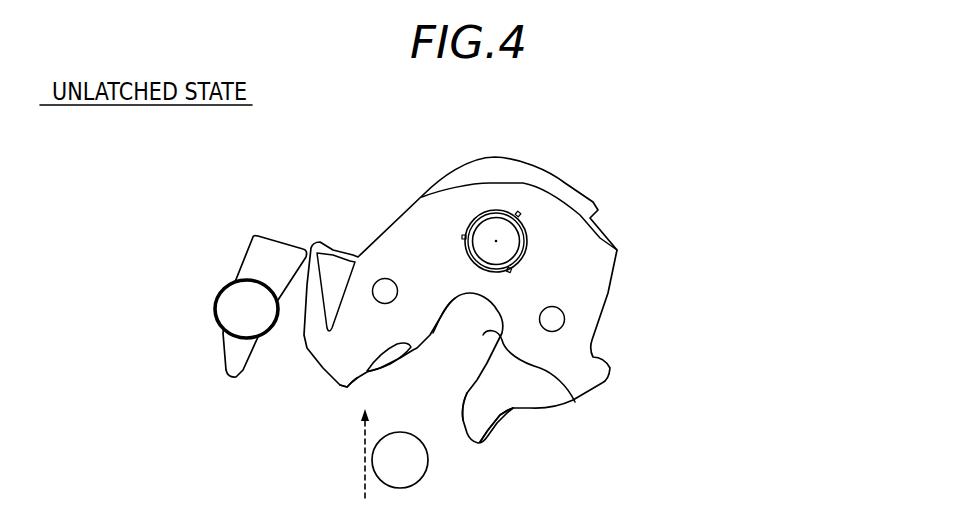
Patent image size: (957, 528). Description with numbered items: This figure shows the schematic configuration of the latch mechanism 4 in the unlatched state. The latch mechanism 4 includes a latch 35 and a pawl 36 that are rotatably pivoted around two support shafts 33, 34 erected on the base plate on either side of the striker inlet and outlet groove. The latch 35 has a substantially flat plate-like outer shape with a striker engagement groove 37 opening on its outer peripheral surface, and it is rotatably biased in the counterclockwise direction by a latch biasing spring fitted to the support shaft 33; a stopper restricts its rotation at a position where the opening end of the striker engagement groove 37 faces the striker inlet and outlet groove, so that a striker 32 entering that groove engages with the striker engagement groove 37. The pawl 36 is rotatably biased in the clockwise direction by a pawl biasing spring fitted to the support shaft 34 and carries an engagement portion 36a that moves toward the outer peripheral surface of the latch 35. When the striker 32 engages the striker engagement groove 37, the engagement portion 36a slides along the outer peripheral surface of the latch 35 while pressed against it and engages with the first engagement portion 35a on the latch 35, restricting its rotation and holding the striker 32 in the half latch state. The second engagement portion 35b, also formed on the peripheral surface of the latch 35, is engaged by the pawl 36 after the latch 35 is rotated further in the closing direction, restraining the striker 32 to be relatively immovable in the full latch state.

The latch mechanism 4 is at (745, 443).
The striker 32 is at (428, 465).
The support shaft 33 is at (472, 223).
The support shaft 34 is at (215, 300).
The latch 35 is at (620, 253).
The first engagement portion 35a is at (353, 380).
The second engagement portion 35b is at (498, 432).
The pawl 36 is at (222, 283).
The engagement portion 36a is at (257, 235).
The striker engagement groove 37 is at (575, 402).